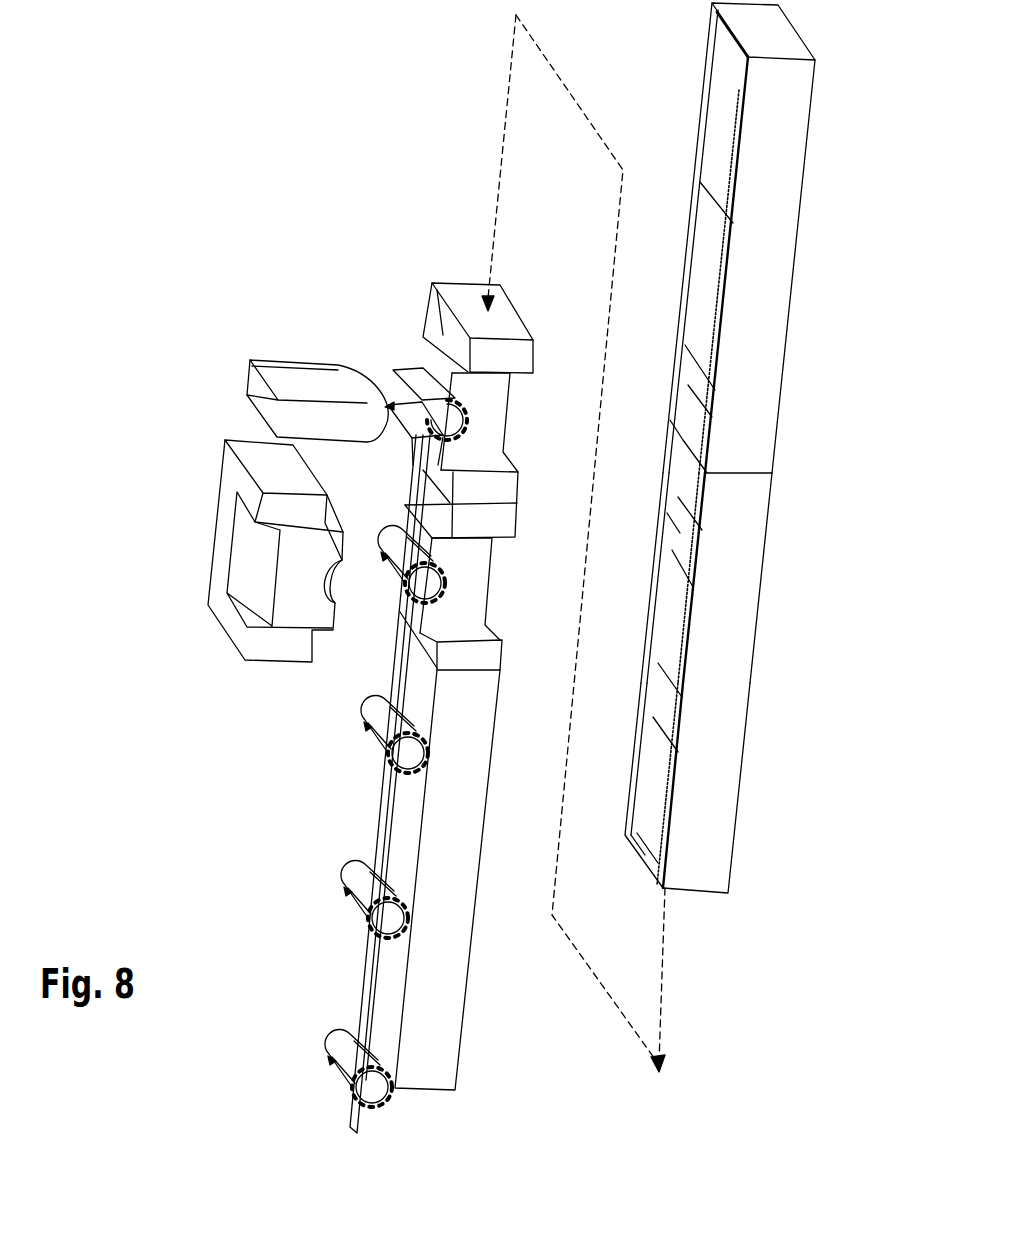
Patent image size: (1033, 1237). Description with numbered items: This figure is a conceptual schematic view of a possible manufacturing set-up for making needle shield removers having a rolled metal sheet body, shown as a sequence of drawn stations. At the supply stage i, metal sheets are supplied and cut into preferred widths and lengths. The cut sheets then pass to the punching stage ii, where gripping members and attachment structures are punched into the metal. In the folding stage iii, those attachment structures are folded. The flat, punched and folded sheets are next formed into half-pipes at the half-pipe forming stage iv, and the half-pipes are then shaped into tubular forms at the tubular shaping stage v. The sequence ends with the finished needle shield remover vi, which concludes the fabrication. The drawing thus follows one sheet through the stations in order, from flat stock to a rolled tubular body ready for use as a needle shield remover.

The metal sheet supply step i is at (759, 238).
The punching step ii is at (733, 585).
The folding step iii is at (711, 788).
The half-pipe forming step iv is at (472, 410).
The tubular shaping step v is at (468, 604).
The finished needle shield remover vi is at (425, 784).